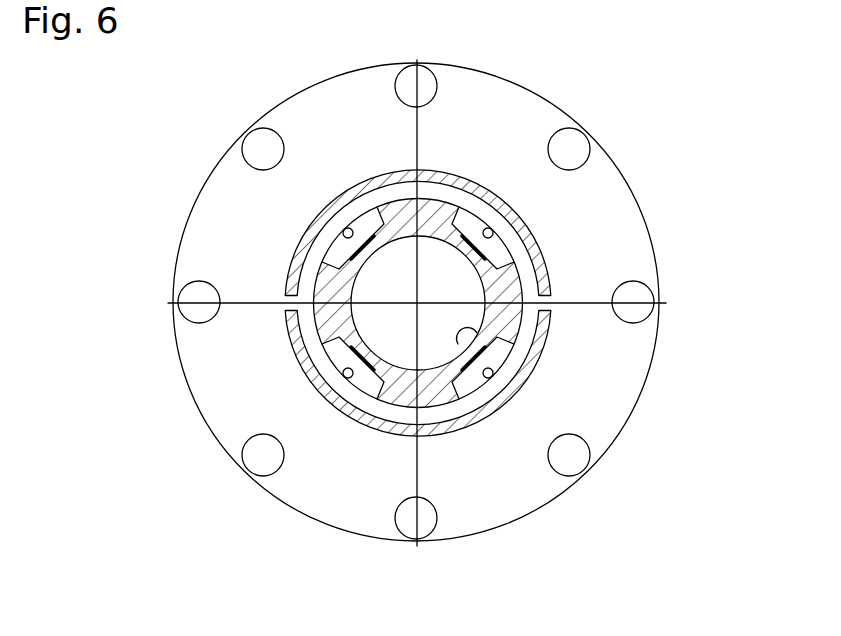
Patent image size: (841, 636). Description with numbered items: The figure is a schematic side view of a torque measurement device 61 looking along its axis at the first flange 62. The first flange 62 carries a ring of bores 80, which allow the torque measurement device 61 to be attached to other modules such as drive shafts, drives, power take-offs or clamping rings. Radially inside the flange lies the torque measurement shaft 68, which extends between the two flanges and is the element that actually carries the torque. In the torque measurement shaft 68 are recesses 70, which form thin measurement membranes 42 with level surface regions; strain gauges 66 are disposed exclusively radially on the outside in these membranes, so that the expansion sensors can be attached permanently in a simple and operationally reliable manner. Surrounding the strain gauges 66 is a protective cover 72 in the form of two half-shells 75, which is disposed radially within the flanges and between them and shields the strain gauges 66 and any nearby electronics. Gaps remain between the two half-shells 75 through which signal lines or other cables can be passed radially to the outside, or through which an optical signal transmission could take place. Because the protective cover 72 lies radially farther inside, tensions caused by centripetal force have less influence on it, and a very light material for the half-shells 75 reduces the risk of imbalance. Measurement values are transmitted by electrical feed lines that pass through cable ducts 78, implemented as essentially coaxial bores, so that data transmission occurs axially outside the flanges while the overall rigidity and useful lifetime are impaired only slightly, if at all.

The torque measurement device 61 is at (238, 115).
The first flange 62 is at (583, 205).
The bores 80 is at (568, 455).
The protective cover 72 is at (368, 180).
The half-shells 75 is at (443, 172).
The torque measurement shaft 68 is at (502, 284).
The measurement membrane 42 is at (482, 331).
The recesses 70 is at (470, 378).
The strain gauges 66 is at (473, 355).
The cable ducts 78 is at (343, 233).